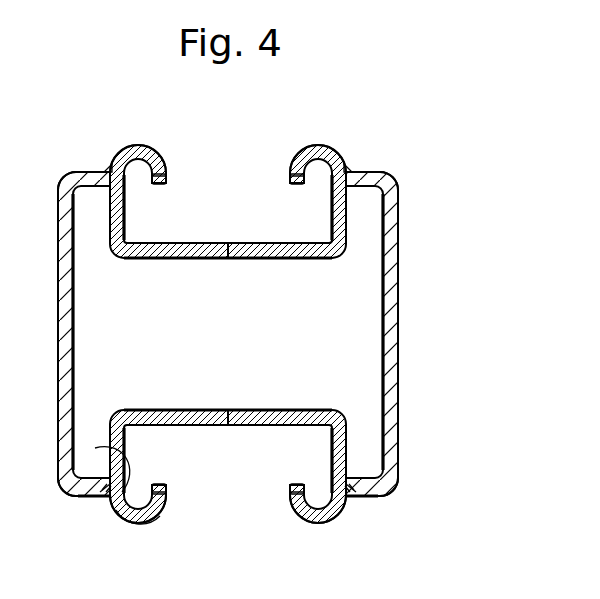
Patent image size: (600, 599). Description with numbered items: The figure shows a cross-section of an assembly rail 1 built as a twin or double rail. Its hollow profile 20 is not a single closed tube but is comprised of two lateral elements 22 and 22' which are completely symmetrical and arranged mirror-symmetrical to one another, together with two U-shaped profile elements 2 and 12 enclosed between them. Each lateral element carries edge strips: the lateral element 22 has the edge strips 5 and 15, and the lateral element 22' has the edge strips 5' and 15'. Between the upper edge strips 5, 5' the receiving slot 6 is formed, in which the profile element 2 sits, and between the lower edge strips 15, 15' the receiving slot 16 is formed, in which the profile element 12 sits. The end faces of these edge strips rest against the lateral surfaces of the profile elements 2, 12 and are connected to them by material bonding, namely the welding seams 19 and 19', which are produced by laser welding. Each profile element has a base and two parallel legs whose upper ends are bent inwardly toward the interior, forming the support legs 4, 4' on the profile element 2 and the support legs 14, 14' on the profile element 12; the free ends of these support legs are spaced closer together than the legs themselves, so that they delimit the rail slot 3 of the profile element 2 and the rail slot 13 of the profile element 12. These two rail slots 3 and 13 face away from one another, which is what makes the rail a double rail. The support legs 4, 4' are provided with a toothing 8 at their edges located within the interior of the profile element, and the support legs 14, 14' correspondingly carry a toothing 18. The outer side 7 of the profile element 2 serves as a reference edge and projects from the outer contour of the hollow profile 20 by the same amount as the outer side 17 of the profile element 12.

The assembly rail 1 is at (165, 92).
The profile element 2 is at (204, 261).
The profile element 12 is at (247, 401).
The hollow profile 20 is at (60, 373).
The rail slot 3 is at (230, 186).
The rail slot 13 is at (229, 458).
The support leg 4 is at (153, 131).
The support leg 4' is at (304, 131).
The support leg 14 is at (155, 525).
The support leg 14' is at (304, 525).
The edge strip 5 is at (79, 170).
The edge strip 5' is at (380, 170).
The receiving slot 6 is at (96, 170).
The outer side 7 is at (324, 148).
The toothing 8 is at (158, 186).
The edge strip 15 is at (77, 493).
The edge strip 15' is at (388, 493).
The receiving slot 16 is at (100, 447).
The outer side 17 is at (136, 524).
The toothing 18 is at (159, 484).
The welding seam 19 is at (116, 323).
The welding seam 19' is at (363, 323).
The lateral element 22 is at (45, 336).
The lateral element 22' is at (418, 336).